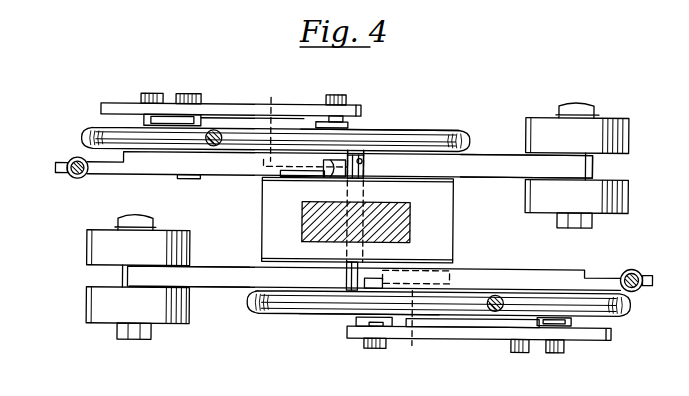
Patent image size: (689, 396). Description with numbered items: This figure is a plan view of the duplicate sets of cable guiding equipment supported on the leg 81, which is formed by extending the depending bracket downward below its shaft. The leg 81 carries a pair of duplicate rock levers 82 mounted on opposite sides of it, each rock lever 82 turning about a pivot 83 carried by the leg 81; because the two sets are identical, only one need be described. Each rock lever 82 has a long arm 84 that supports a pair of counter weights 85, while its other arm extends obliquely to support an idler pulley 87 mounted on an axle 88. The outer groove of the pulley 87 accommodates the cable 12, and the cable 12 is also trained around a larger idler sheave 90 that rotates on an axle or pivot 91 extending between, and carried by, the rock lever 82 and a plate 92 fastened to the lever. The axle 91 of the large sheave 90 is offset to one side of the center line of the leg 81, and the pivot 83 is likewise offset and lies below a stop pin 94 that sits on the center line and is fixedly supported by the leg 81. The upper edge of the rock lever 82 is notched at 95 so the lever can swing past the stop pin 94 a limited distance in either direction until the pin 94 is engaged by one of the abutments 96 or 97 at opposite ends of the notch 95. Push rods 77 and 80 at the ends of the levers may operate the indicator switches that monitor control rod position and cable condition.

The cable 12 is at (220, 130).
The push rod 77 is at (642, 266).
The push rod 80 is at (67, 176).
The leg 81 is at (306, 229).
The rock lever 82 is at (226, 171).
The pivot 83 is at (356, 226).
The long arm 84 is at (476, 157).
The counter weight 85 is at (626, 131).
The idler pulley 87 is at (91, 128).
The axle 88 is at (147, 95).
The idler sheave 90 is at (372, 129).
The axle 91 is at (342, 96).
The plate 92 is at (204, 114).
The stop pin 94 is at (364, 176).
The notch 95 is at (342, 167).
The abutment 96 is at (323, 176).
The abutment 97 is at (358, 156).